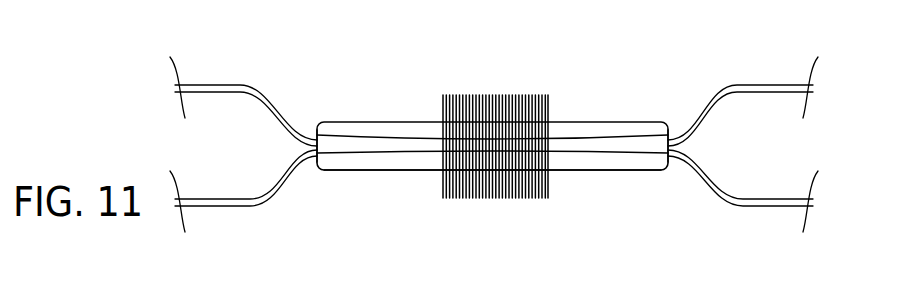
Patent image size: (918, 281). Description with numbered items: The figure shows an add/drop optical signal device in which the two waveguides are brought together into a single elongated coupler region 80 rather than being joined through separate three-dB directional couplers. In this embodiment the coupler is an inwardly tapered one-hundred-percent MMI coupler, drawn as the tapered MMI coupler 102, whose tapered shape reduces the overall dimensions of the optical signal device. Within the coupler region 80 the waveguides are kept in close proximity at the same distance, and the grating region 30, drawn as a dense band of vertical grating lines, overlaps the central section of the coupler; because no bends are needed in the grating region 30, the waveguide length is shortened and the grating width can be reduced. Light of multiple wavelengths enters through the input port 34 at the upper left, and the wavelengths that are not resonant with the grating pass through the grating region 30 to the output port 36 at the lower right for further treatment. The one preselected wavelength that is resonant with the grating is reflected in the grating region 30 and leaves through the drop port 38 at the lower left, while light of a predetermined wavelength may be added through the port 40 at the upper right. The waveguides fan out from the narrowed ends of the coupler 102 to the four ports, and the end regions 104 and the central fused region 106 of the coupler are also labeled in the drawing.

The grating region 30 is at (497, 93).
The input port 34 is at (175, 84).
The output port 36 is at (812, 198).
The drop port 38 is at (175, 198).
The add port 40 is at (812, 84).
The coupler region 80 is at (345, 117).
The tapered MMI coupler 102 is at (380, 171).
The tapered end regions 104 is at (313, 160).
The fused coupling region 106 is at (563, 155).